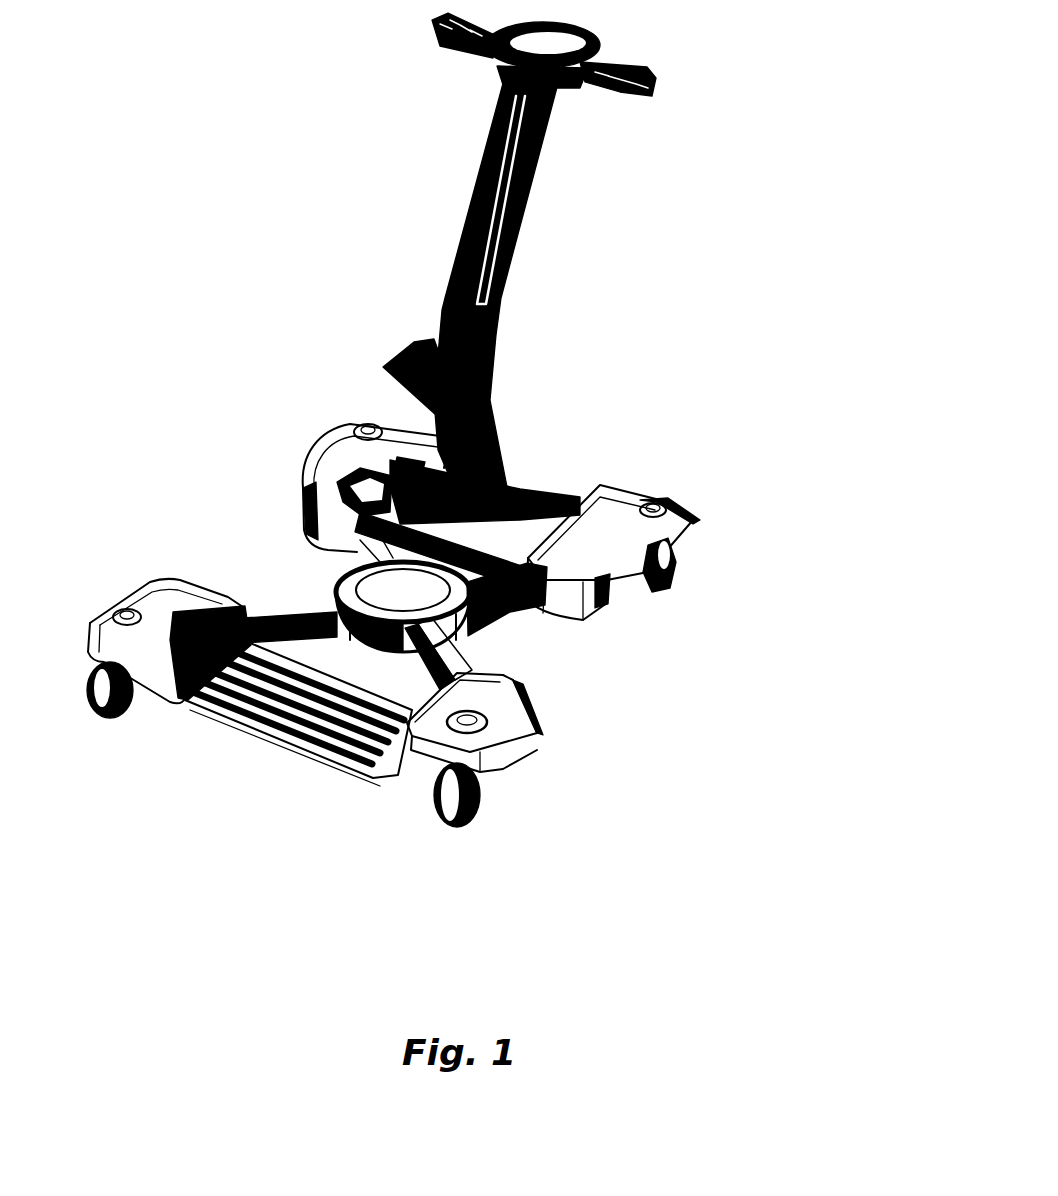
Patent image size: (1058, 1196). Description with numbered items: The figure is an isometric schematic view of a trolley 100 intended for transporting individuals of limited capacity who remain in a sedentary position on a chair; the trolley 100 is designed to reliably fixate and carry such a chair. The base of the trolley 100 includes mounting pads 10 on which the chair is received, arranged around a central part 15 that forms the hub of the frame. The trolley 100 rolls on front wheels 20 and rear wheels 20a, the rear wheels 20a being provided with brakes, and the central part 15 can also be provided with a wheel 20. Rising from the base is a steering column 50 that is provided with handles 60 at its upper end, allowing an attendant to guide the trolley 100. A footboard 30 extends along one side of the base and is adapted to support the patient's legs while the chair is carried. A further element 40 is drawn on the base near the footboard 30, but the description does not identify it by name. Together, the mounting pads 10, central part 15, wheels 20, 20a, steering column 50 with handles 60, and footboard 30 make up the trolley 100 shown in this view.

The trolley 100 is at (224, 366).
The handles 60 is at (655, 82).
The steering column 50 is at (507, 285).
The mounting pads 10 is at (638, 577).
The central part 15 is at (495, 637).
The latch block 40 is at (199, 598).
The footboard 30 is at (276, 722).
The front wheels 20 is at (440, 805).
The rear wheels 20a is at (683, 557).